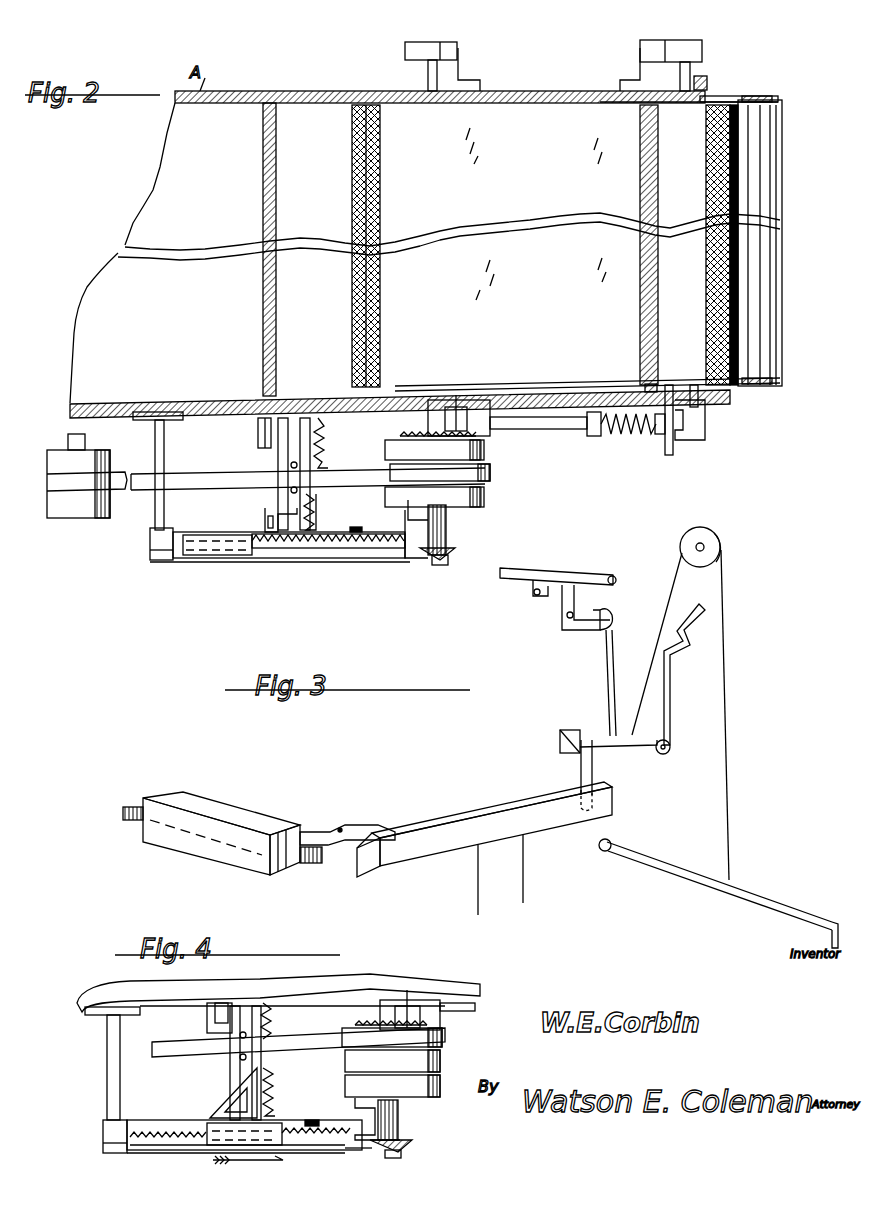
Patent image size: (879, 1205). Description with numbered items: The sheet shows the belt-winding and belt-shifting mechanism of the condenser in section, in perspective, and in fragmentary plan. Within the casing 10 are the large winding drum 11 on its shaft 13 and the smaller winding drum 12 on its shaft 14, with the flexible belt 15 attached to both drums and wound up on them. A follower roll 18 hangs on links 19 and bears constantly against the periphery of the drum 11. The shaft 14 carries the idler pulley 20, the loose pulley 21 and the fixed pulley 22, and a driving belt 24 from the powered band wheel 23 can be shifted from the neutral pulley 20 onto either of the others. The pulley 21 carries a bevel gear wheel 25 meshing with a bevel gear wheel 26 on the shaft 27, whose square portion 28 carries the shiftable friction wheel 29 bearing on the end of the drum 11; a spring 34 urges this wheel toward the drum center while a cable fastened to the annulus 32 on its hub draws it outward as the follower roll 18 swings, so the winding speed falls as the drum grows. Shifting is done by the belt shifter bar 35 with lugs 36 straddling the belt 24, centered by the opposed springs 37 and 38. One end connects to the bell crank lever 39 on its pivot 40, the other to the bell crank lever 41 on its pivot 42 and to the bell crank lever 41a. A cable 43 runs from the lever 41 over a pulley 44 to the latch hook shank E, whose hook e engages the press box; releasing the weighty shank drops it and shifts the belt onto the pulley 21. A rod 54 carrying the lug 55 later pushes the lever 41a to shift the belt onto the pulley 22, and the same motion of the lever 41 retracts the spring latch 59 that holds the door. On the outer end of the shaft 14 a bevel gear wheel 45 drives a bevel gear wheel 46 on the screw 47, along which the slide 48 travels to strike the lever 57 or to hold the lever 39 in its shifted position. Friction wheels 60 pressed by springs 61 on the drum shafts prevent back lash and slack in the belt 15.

In FIG. 2, the casing 10 is at (330, 91).
In FIG. 2, the winding drum 11 is at (745, 302).
In FIG. 2, the winding drum 12 is at (352, 166).
In FIG. 2, the shaft 13 is at (706, 75).
In FIG. 2, the shaft 14 is at (430, 103).
In FIG. 4, the shaft 14 is at (402, 1125).
In FIG. 2, the belt 15 is at (538, 108).
In FIG. 2, the follower roll 18 is at (760, 182).
In FIG. 2, the links 19 is at (774, 98).
In FIG. 2, the idler pulley 20 is at (492, 475).
In FIG. 4, the idler pulley 20 is at (442, 1062).
In FIG. 2, the pulley 21 is at (486, 448).
In FIG. 4, the pulley 21 is at (448, 1045).
In FIG. 2, the pulley 22 is at (484, 505).
In FIG. 4, the pulley 22 is at (442, 1088).
In FIG. 2, the band wheel 23 is at (80, 505).
In FIG. 2, the driving belt 24 is at (245, 478).
In FIG. 2, the bevel gear wheel 25 is at (412, 436).
In FIG. 4, the bevel gear wheel 25 is at (368, 1025).
In FIG. 2, the bevel gear wheel 26 is at (458, 400).
In FIG. 4, the bevel gear wheel 26 is at (410, 1000).
In FIG. 2, the shaft 27 is at (568, 430).
In FIG. 3, the shaft 27 is at (315, 864).
In FIG. 4, the shaft 27 is at (478, 1012).
In FIG. 2, the square portion 28 is at (616, 432).
In FIG. 2, the friction wheel 29 is at (676, 456).
In FIG. 2, the annulus 32 is at (665, 432).
In FIG. 2, the spring 34 is at (600, 410).
In FIG. 2, the belt shifter bar 35 is at (282, 452).
In FIG. 3, the belt shifter bar 35 is at (482, 818).
In FIG. 4, the belt shifter bar 35 is at (232, 1068).
In FIG. 2, the lugs 36 is at (312, 470).
In FIG. 3, the lugs 36 is at (526, 906).
In FIG. 2, the spring 37 is at (326, 443).
In FIG. 4, the spring 37 is at (275, 1012).
In FIG. 2, the spring 38 is at (316, 505).
In FIG. 4, the spring 38 is at (278, 1092).
In FIG. 2, the bell crank lever 39 is at (266, 520).
In FIG. 3, the bell crank lever 39 is at (375, 825).
In FIG. 4, the bell crank lever 39 is at (220, 1105).
In FIG. 3, the pivot 40 is at (340, 826).
In FIG. 2, the bell crank lever 41 is at (258, 440).
In FIG. 3, the bell crank lever 41 is at (581, 774).
In FIG. 3, the bell crank lever 41a is at (590, 632).
In FIG. 4, the bell crank lever 41a is at (207, 1014).
In FIG. 3, the pivot 42 is at (583, 735).
In FIG. 3, the cable 43 is at (733, 785).
In FIG. 3, the pulley 44 is at (716, 534).
In FIG. 2, the bevel gear wheel 45 is at (456, 550).
In FIG. 4, the bevel gear wheel 45 is at (414, 1144).
In FIG. 2, the bevel gear wheel 46 is at (410, 545).
In FIG. 4, the bevel gear wheel 46 is at (378, 1145).
In FIG. 2, the screw 47 is at (318, 548).
In FIG. 4, the screw 47 is at (333, 1147).
In FIG. 2, the slide 48 is at (218, 548).
In FIG. 3, the slide 48 is at (198, 852).
In FIG. 4, the slide 48 is at (208, 1140).
In FIG. 3, the rod 54 is at (530, 570).
In FIG. 3, the lug 55 is at (533, 594).
In FIG. 2, the lever 57 is at (356, 527).
In FIG. 4, the lever 57 is at (312, 1120).
In FIG. 3, the spring latch 59 is at (680, 668).
In FIG. 2, the friction wheels 60 is at (430, 42).
In FIG. 2, the springs 61 is at (462, 60).
In FIG. 3, the latch hook shank E is at (765, 900).
In FIG. 3, the hook e is at (830, 938).